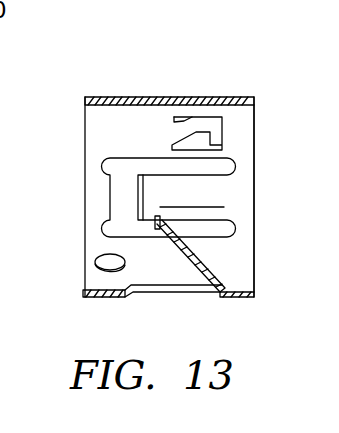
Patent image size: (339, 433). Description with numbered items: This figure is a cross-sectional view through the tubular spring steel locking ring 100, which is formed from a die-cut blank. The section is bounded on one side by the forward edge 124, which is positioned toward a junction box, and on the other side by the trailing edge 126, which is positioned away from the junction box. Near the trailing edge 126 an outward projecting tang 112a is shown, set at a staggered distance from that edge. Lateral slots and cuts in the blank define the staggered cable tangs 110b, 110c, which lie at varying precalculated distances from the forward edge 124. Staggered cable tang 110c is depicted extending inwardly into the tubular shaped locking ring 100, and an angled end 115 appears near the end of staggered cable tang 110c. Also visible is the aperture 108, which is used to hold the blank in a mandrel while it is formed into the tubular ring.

The spring steel locking ring 100 is at (170, 89).
The outward projecting tang 112a is at (195, 128).
The forward edge 124 is at (85, 157).
The staggered cable tang 110b is at (183, 197).
The angled end 115 is at (157, 231).
The aperture 108 is at (103, 263).
The staggered cable tang 110c is at (182, 252).
The trailing edge 126 is at (254, 198).